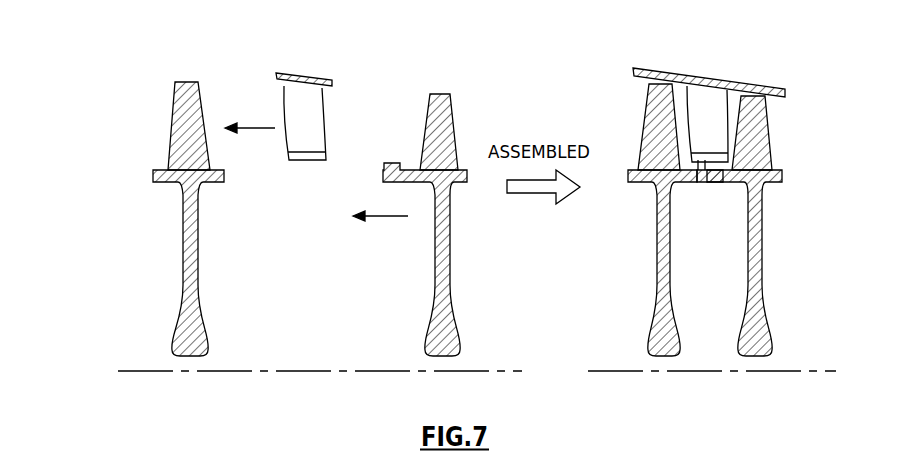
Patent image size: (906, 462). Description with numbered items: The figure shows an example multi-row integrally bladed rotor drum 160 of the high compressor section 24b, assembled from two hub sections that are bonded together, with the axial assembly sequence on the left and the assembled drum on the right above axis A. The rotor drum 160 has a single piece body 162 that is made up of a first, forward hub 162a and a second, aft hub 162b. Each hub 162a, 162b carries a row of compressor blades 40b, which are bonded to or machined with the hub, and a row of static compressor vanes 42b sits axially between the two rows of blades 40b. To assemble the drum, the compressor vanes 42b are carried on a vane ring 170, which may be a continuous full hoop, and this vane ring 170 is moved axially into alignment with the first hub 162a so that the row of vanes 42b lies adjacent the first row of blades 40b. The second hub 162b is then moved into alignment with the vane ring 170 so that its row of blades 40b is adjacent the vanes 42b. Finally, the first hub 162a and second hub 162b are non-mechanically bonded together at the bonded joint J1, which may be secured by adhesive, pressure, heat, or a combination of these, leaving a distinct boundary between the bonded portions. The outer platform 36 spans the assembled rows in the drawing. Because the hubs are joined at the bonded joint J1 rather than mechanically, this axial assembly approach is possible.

The high compressor section 24b is at (463, 219).
The compressor blades 40b is at (171, 128).
The compressor vanes 42b is at (325, 108).
The outer platform 36 is at (650, 68).
The multi-row integrally bladed rotor drum 160 is at (676, 260).
The single piece body 162 is at (748, 232).
The first, forward hub 162a is at (183, 283).
The second, aft hub 162b is at (450, 273).
The vane ring 170 is at (313, 66).
The bonded joint J1 is at (699, 183).
The axis A is at (131, 371).